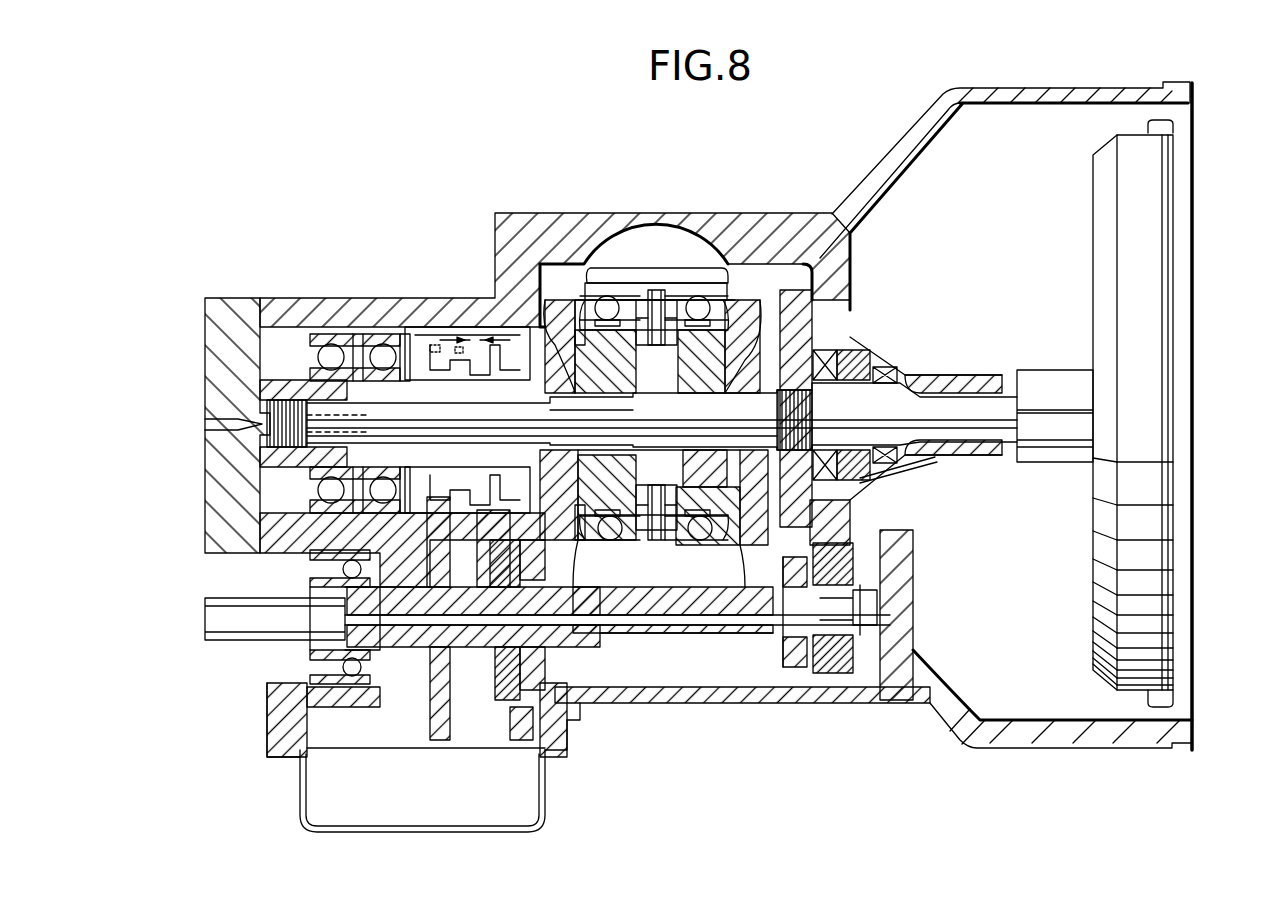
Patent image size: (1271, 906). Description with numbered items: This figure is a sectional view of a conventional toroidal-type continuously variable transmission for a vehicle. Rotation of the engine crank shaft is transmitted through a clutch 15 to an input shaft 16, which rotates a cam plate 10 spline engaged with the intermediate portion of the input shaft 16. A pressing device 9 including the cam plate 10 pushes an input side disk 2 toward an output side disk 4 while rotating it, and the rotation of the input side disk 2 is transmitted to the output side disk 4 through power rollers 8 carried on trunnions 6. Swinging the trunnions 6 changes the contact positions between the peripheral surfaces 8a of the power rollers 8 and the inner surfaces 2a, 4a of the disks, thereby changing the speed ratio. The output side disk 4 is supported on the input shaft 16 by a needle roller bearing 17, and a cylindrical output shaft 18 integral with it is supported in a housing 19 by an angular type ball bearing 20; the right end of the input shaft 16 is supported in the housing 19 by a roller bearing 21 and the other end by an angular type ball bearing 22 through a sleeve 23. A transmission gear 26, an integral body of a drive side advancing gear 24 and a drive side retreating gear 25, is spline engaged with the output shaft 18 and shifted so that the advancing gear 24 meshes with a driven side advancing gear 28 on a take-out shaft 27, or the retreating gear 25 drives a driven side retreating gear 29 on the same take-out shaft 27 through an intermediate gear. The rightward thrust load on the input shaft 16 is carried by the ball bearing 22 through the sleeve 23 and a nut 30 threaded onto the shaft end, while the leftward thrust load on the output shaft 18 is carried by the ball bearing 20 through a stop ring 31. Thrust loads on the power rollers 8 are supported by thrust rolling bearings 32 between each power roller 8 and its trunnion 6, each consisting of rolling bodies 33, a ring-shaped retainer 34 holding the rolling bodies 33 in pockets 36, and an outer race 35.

The input side disk 2 is at (750, 287).
The inner surface of the input side disk 2a is at (693, 460).
The output side disk 4 is at (540, 320).
The inner surface of the output side disk 4a is at (647, 277).
The trunnion 6 is at (650, 273).
The power roller 8 is at (690, 277).
The peripheral surface of the power roller 8a is at (557, 300).
The pressing device 9 is at (847, 263).
The cam plate 10 is at (847, 297).
The clutch 15 is at (1150, 310).
The input shaft 16 is at (918, 373).
The needle roller bearing 17 is at (607, 360).
The output shaft 18 is at (406, 340).
The housing 19 is at (1017, 733).
The ball bearing 20 is at (373, 340).
The roller bearing 21 is at (910, 378).
The ball bearing 22 is at (327, 340).
The sleeve 23 is at (297, 340).
The drive side advancing gear 24 is at (507, 318).
The drive side retreating gear 25 is at (430, 340).
The transmission gear 26 is at (470, 340).
The take-out shaft 27 is at (233, 630).
The driven side advancing gear 28 is at (517, 740).
The driven side retreating gear 29 is at (443, 740).
The nut 30 is at (276, 393).
The stop ring 31 is at (410, 470).
The thrust rolling bearing 32 is at (720, 303).
The rolling body 33 is at (603, 298).
The retainer 34 is at (660, 280).
The outer race 35 is at (578, 295).
The pocket 36 is at (602, 287).